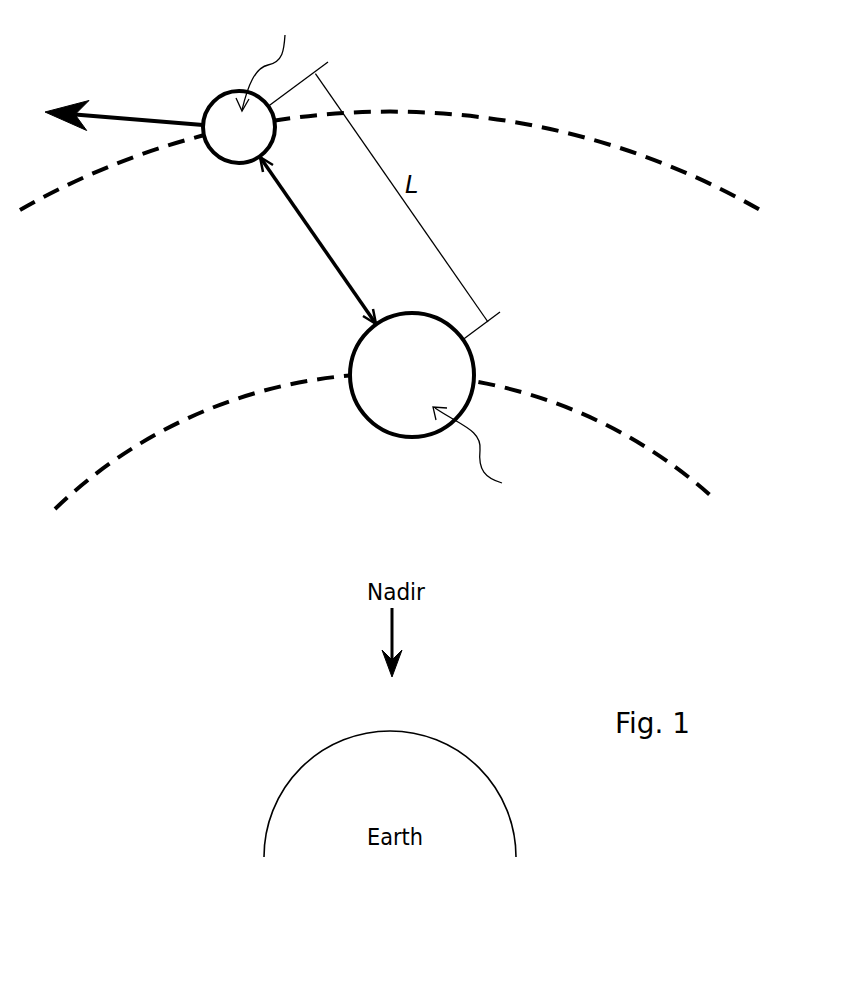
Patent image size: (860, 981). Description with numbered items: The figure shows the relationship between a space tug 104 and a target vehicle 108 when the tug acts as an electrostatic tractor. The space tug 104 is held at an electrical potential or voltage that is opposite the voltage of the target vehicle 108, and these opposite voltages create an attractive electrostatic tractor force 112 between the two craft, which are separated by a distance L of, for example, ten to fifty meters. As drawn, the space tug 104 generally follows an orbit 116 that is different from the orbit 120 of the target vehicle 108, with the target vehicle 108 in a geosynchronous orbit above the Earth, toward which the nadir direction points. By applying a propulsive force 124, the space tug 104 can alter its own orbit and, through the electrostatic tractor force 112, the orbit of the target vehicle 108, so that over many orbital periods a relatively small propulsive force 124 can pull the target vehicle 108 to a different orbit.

The space tug 104 is at (212, 98).
The target vehicle 108 is at (477, 393).
The electrostatic tractor force 112 is at (325, 258).
The orbit of the space tug 116 is at (558, 128).
The orbit of the target vehicle 120 is at (593, 412).
The propulsive force 124 is at (130, 114).